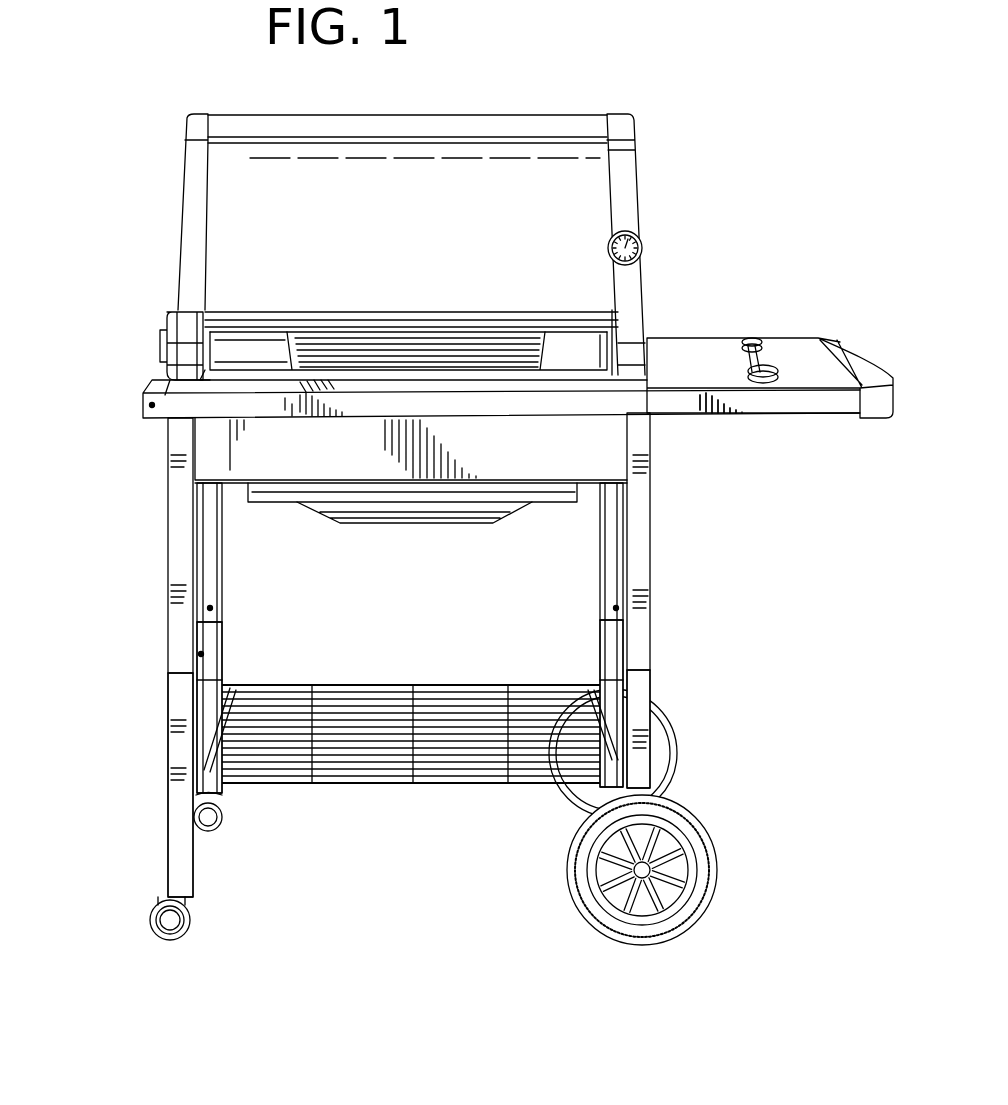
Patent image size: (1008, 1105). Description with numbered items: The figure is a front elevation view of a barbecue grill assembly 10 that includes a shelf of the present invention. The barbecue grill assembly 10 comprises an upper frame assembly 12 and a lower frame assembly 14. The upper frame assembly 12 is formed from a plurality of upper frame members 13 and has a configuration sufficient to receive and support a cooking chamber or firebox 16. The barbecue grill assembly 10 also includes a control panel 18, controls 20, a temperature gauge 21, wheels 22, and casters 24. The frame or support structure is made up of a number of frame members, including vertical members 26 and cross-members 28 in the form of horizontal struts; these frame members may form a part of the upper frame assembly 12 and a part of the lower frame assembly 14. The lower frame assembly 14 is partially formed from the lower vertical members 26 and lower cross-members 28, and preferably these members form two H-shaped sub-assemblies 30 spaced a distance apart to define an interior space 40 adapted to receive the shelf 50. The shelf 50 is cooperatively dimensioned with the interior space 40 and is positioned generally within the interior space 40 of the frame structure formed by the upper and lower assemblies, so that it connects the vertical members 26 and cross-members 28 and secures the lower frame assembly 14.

The barbecue grill assembly 10 is at (697, 125).
The upper frame assembly 12 is at (137, 497).
The upper frame members 13 is at (177, 545).
The lower frame assembly 14 is at (138, 792).
The firebox 16 is at (160, 268).
The control panel 18 is at (790, 355).
The controls 20 is at (758, 340).
The temperature gauge 21 is at (647, 247).
The wheels 22 is at (180, 922).
The casters 24 is at (678, 928).
The vertical members 26 is at (180, 702).
The cross-members 28 is at (222, 705).
The H-shaped sub-assemblies 30 is at (160, 848).
The interior space 40 is at (453, 617).
The shelf 50 is at (380, 792).